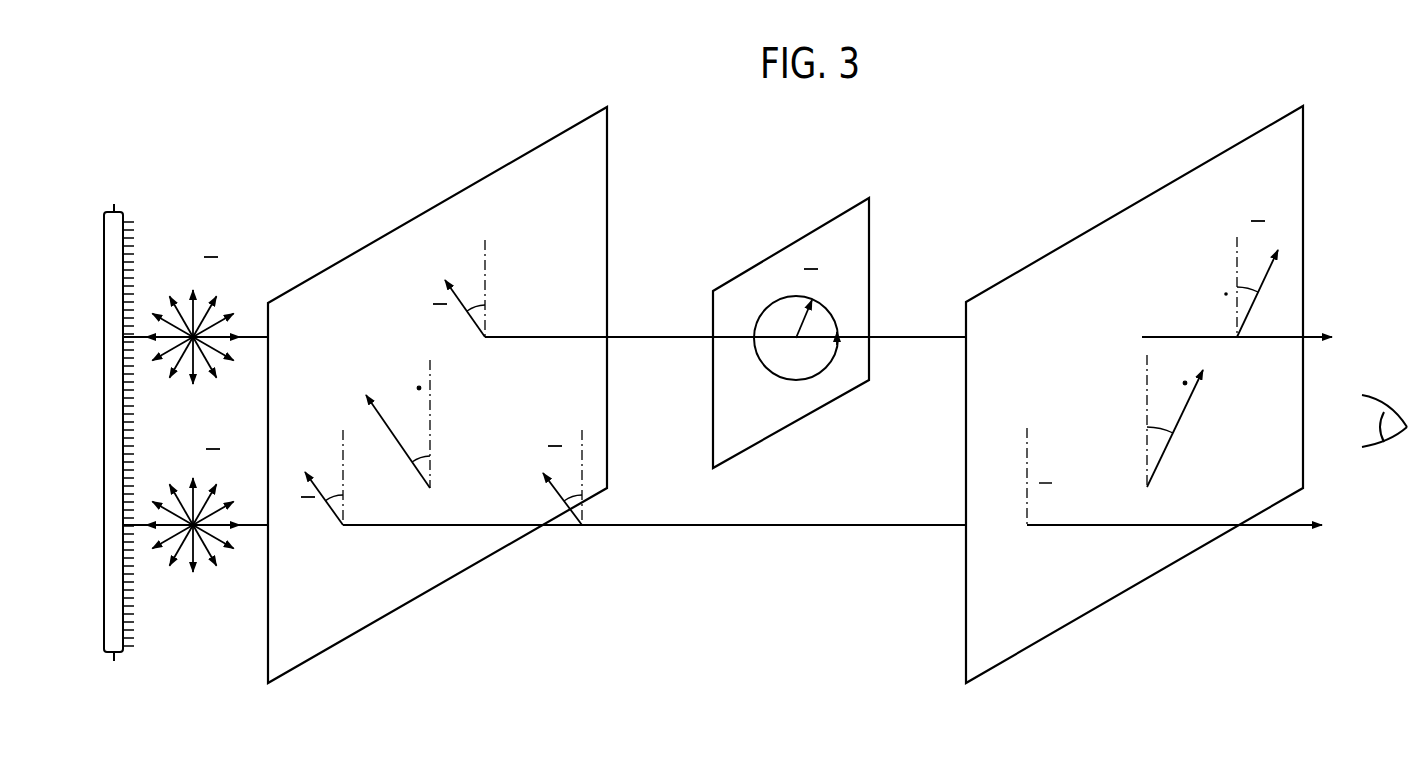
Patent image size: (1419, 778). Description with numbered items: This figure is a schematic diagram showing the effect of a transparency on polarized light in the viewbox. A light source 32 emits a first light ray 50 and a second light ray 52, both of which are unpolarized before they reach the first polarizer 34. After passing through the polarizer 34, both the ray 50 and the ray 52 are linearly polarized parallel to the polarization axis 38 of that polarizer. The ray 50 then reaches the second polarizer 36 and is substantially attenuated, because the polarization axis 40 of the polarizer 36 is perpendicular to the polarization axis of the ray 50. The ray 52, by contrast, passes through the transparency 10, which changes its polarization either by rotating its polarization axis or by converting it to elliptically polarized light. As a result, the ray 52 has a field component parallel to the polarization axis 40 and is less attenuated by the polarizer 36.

The transparency 10 is at (840, 215).
The light source 32 is at (108, 214).
The polarizer 34 is at (511, 161).
The polarizer 36 is at (1188, 173).
The polarization axis 38 is at (433, 400).
The polarization axis 40 is at (1183, 415).
The first light ray 50 is at (190, 553).
The second light ray 52 is at (181, 306).